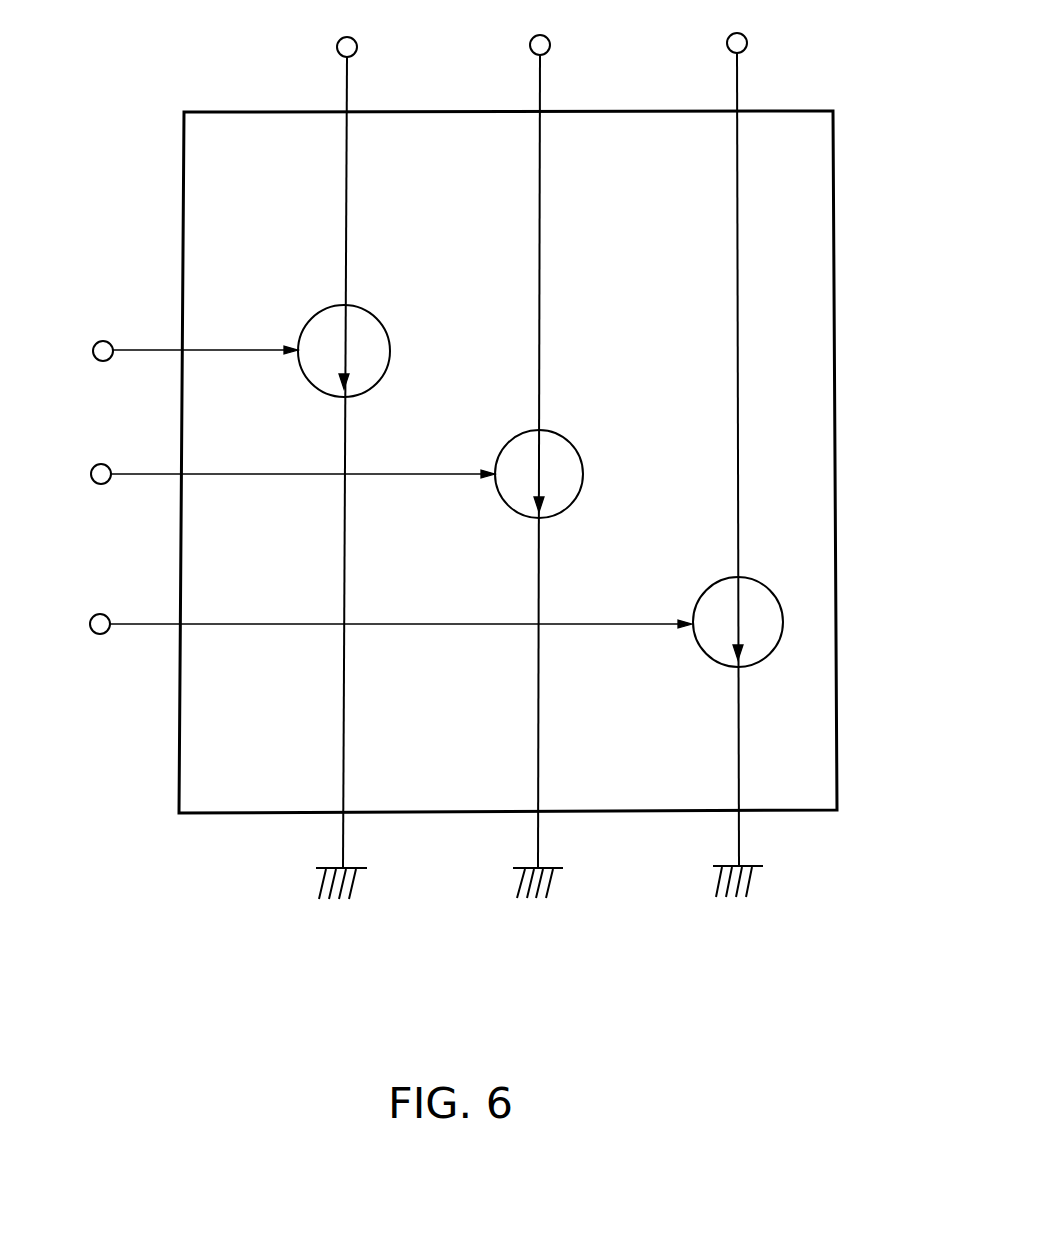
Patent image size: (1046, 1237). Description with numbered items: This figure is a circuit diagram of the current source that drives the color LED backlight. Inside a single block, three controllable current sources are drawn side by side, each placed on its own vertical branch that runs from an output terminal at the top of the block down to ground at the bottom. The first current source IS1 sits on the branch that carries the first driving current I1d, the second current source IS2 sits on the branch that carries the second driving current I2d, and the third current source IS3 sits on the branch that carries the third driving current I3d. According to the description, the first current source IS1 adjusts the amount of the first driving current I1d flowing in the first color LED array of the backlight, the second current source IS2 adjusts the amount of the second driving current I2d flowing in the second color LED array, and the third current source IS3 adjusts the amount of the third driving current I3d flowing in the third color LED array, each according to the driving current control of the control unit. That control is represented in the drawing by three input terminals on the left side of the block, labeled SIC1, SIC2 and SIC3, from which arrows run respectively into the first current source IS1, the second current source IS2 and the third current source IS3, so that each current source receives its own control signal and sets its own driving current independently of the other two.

The first driving current I1d is at (343, 450).
The second driving current I2d is at (538, 449).
The third driving current I3d is at (738, 448).
The first current source IS1 is at (363, 350).
The second current source IS2 is at (549, 461).
The third current source IS3 is at (751, 609).
The first current control signal input SIC1 is at (163, 351).
The second current control signal input SIC2 is at (261, 475).
The third current control signal input SIC3 is at (359, 625).